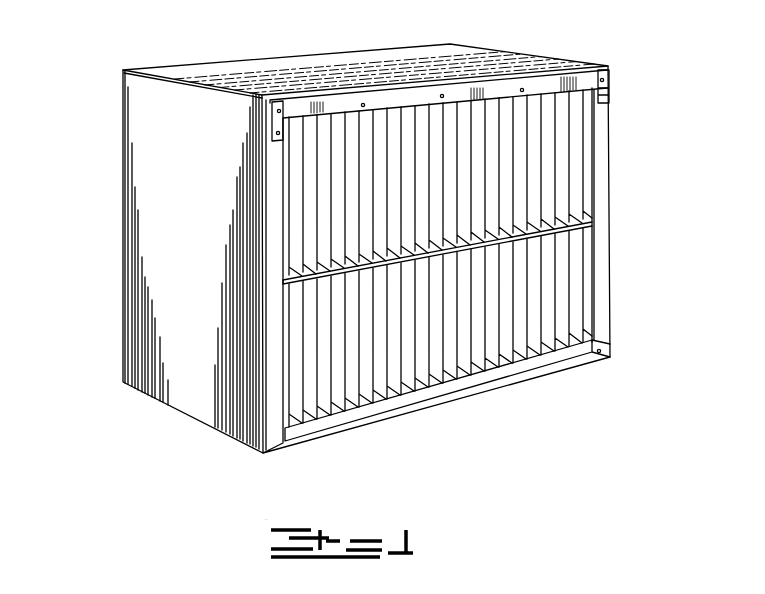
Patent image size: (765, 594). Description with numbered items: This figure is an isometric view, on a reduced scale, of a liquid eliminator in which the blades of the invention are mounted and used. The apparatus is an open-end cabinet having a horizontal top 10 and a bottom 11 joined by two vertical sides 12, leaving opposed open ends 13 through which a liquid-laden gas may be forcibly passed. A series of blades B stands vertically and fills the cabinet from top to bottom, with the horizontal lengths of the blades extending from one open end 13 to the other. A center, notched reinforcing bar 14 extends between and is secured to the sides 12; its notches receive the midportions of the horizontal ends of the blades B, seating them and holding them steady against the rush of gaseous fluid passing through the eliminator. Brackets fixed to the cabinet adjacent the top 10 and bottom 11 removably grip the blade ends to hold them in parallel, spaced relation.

The horizontal top 10 is at (313, 66).
The bottom 11 is at (393, 420).
The vertical sides 12 is at (135, 278).
The open ends 13 is at (293, 387).
The center notched reinforcing bar 14 is at (547, 228).
The blades B is at (500, 366).